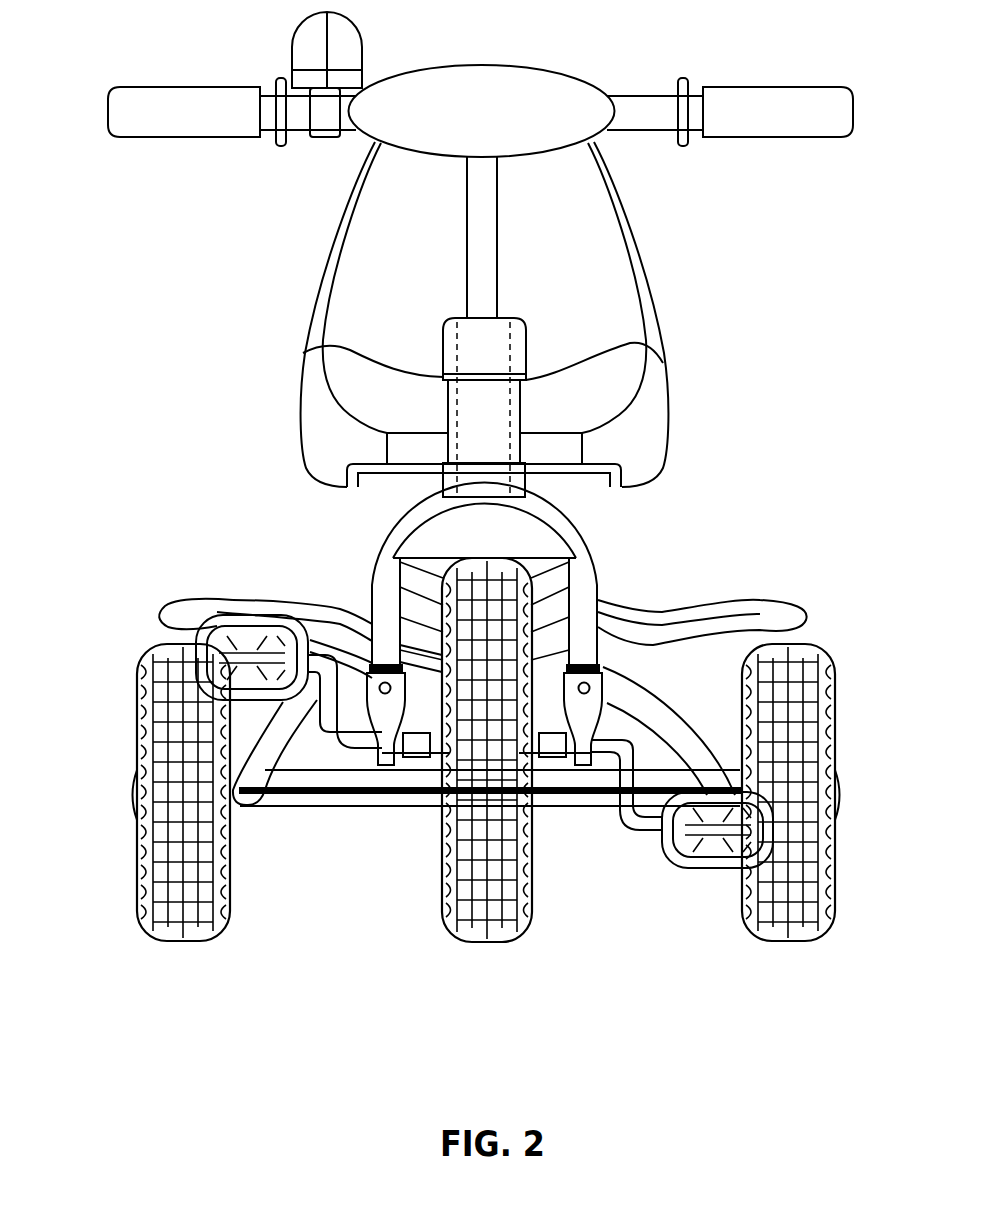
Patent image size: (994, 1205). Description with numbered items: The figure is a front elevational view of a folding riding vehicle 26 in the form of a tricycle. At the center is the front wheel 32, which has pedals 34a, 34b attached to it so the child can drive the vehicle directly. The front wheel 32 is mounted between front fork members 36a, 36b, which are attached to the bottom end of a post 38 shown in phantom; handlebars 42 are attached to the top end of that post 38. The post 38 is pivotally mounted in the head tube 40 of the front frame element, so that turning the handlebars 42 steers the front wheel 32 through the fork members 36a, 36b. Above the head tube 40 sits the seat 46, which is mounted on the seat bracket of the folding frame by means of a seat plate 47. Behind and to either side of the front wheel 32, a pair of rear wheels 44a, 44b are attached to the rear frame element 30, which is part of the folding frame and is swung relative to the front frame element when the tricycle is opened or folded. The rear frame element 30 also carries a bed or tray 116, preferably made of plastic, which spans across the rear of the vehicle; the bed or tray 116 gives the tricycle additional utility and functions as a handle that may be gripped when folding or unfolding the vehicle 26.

The folding riding vehicle 26 is at (320, 1002).
The rear frame element 30 is at (322, 768).
The front wheel 32 is at (487, 944).
The pedal 34a is at (696, 866).
The pedal 34b is at (237, 614).
The front fork member 36a is at (587, 588).
The front fork member 36b is at (383, 582).
The post 38 is at (440, 358).
The head tube 40 is at (663, 365).
The handlebars 42 is at (122, 88).
The rear wheel 44a is at (817, 941).
The rear wheel 44b is at (150, 937).
The seat 46 is at (643, 237).
The seat plate 47 is at (557, 474).
The bed or tray 116 is at (765, 600).